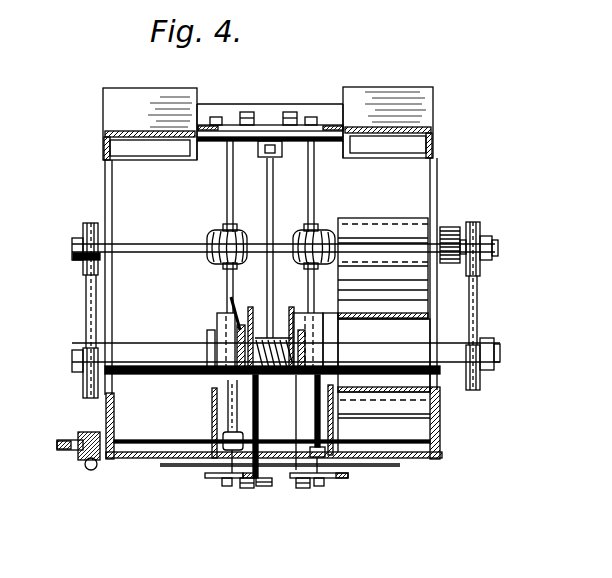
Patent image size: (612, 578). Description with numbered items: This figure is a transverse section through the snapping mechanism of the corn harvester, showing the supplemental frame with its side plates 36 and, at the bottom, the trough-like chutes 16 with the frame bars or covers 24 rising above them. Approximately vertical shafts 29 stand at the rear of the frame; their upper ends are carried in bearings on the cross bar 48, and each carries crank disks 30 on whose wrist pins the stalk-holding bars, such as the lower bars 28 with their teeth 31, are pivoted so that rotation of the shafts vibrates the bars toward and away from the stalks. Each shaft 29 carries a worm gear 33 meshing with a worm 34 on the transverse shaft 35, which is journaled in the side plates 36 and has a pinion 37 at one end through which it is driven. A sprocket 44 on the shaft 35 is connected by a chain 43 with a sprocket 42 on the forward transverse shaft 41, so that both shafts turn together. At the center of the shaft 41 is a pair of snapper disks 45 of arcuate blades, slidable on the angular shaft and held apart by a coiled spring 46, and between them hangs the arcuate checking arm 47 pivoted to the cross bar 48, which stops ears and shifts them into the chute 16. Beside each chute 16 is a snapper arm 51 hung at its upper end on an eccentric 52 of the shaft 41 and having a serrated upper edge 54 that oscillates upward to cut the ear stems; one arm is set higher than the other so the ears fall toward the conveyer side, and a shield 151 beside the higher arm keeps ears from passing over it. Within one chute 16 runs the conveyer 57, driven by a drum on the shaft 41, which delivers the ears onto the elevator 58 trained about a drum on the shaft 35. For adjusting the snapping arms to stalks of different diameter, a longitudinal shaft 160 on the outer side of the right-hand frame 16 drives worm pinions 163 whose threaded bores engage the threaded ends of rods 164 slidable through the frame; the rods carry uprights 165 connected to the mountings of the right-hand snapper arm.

The chute 16 is at (214, 460).
The frame bar or cover 24 is at (150, 104).
The lower stalk-holding and feeding bar 28 is at (246, 490).
The shaft 29 is at (226, 176).
The crank disk 30 is at (212, 125).
The teeth 31 is at (262, 488).
The worm gear 33 is at (238, 234).
The worm 34 is at (206, 246).
The transverse shaft 35 is at (280, 246).
The side plate 36 is at (113, 218).
The pinion 37 is at (455, 230).
The transverse shaft 41 is at (498, 352).
The sprocket 42 is at (86, 390).
The chain 43 is at (88, 310).
The sprocket 44 is at (84, 228).
The snapper disk 45 is at (258, 428).
The spring 46 is at (272, 376).
The checking arm 47 is at (292, 187).
The cross bar 48 is at (268, 140).
The snapper arm 51 is at (212, 362).
The eccentric 52 is at (222, 314).
The serrated upper edge 54 is at (232, 300).
The conveyer 57 is at (402, 402).
The elevator 58 is at (398, 230).
The shield 151 is at (212, 332).
The longitudinal shaft 160 is at (90, 470).
The worm pinion 163 is at (84, 438).
The rod 164 is at (156, 444).
The upright 165 is at (212, 402).